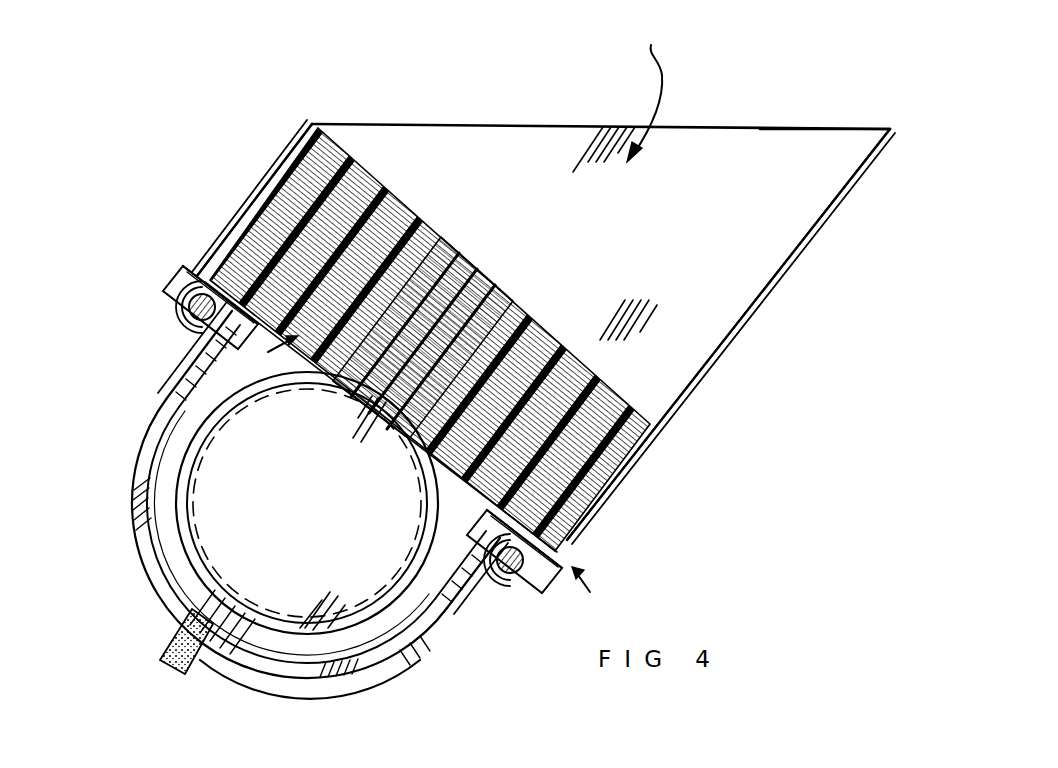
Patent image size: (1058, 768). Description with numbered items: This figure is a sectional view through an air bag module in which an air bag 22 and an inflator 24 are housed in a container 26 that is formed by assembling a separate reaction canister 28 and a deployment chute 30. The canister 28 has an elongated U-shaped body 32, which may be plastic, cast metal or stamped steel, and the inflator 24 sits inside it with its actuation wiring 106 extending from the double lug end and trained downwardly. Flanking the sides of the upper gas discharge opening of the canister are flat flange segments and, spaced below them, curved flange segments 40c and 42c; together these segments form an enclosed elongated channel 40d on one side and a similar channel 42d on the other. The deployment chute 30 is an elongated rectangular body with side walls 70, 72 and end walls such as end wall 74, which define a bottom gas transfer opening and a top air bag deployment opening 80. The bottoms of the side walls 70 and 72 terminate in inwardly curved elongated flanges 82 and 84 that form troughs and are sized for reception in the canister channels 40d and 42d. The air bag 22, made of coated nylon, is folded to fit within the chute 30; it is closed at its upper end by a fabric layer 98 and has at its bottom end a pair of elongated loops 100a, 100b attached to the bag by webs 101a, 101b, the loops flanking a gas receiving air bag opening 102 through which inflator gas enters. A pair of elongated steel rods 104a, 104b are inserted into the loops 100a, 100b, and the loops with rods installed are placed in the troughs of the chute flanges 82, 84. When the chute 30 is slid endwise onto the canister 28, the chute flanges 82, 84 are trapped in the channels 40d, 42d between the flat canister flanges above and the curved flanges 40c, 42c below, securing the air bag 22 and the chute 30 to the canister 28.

The air bag 22 is at (556, 330).
The inflator 24 is at (200, 530).
The container 26 is at (593, 593).
The reaction canister 28 is at (300, 670).
The deployment chute 30 is at (738, 334).
The U-shaped body 32 is at (142, 487).
The curved flange segment 40c is at (475, 605).
The channel 40d is at (478, 600).
The curved flange segment 42c is at (188, 345).
The channel 42d is at (190, 358).
The side wall 70 is at (848, 185).
The side wall 72 is at (310, 124).
The end wall 74 is at (806, 148).
The air bag deployment opening 80 is at (655, 98).
The flange 82 is at (185, 305).
The flange 84 is at (510, 583).
The fabric layer 98 is at (486, 248).
The elongated loop 100a is at (188, 272).
The elongated loop 100b is at (563, 560).
The web 101a is at (200, 258).
The web 101b is at (565, 535).
The gas receiving air bag opening 102 is at (261, 352).
The steel rod 104a is at (182, 327).
The steel rod 104b is at (540, 583).
The actuation wiring 106 is at (193, 655).